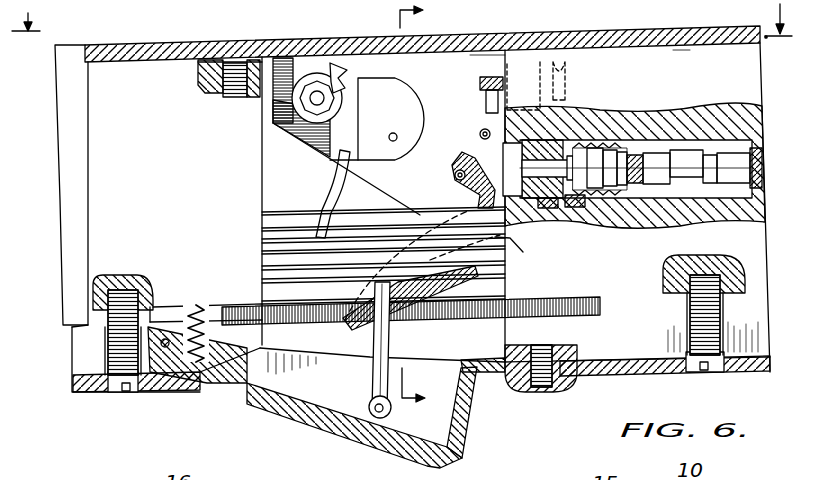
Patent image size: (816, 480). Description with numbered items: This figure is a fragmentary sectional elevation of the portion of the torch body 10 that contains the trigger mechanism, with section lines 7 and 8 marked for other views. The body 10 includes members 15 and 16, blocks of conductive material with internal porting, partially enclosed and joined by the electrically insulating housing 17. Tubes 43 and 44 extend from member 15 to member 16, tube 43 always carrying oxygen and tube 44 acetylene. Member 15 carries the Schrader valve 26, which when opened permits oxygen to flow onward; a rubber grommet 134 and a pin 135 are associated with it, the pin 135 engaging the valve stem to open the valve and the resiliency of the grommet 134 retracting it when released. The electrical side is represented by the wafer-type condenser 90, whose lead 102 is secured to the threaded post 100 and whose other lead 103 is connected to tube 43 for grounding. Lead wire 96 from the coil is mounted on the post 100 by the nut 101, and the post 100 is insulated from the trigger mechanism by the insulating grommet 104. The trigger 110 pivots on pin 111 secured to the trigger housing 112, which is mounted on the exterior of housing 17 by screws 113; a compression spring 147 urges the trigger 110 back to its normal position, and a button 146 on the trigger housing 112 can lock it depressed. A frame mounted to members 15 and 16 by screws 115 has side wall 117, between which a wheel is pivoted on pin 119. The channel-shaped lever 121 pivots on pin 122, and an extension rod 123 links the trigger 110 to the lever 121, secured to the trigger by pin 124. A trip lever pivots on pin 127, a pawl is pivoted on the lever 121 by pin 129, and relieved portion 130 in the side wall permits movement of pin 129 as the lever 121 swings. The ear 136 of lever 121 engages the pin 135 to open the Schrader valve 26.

The section line 7- 7 is at (404, 19).
The section line 8- 8 is at (421, 206).
The body 10 is at (716, 22).
The member 15 is at (673, 50).
The member 16 is at (131, 72).
The housing 17 is at (227, 55).
The Schrader valve 26 is at (648, 143).
The tube 43 is at (280, 213).
The tube 44 is at (270, 263).
The condenser 90 is at (418, 92).
The lead wire 96 is at (493, 55).
The threaded post 100 is at (317, 91).
The nut 101 is at (295, 92).
The lead 102 is at (349, 88).
The lead 103 is at (313, 190).
The insulating grommet 104 is at (277, 112).
The trigger 110 is at (312, 410).
The pin 111 is at (163, 347).
The trigger housing 112 is at (634, 374).
The screw 113 is at (108, 358).
The screw 115 is at (563, 68).
The side wall 117 is at (387, 193).
The pin 119 is at (408, 114).
The channel-shaped lever 121 is at (372, 303).
The pin 122 is at (528, 253).
The extension rod 123 is at (378, 336).
The pin 124 is at (377, 414).
The pin 127 is at (479, 128).
The pin 129 is at (454, 176).
The relieved portion 130 is at (466, 136).
The rubber grommet 134 is at (563, 100).
The pin 135 is at (530, 88).
The ear 136 is at (468, 182).
The button 146 is at (563, 378).
The compression spring 147 is at (195, 380).